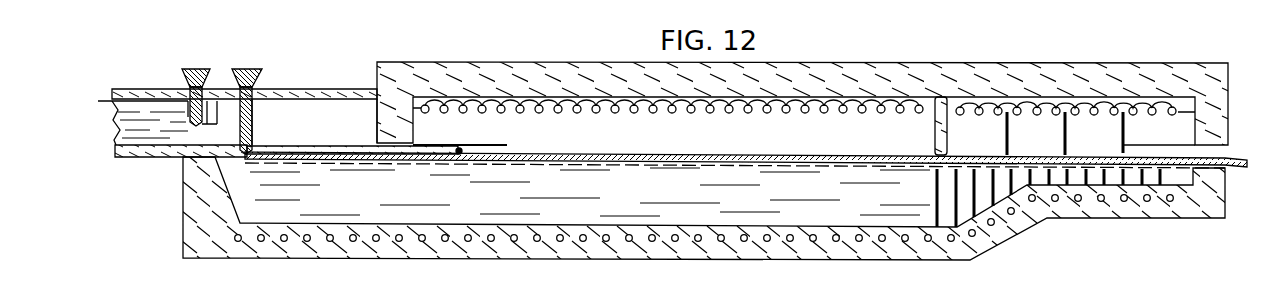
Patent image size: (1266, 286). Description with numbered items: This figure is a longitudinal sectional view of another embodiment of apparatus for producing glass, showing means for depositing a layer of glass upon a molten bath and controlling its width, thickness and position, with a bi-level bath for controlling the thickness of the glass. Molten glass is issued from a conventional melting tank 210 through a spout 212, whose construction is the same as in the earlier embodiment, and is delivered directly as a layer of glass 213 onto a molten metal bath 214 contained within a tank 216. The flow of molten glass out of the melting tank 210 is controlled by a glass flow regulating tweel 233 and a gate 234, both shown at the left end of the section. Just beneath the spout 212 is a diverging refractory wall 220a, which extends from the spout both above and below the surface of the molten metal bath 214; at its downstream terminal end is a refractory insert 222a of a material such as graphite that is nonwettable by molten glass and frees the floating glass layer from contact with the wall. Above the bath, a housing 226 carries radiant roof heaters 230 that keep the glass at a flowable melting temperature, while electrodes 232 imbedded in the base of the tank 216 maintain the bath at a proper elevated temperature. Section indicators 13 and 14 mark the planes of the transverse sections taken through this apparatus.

The section line 13- 13 is at (98, 110).
The section line 14- 14 is at (635, 133).
The melting tank 210 is at (174, 159).
The spout 212 is at (251, 142).
The layer of glass 213 is at (290, 160).
The molten metal bath 214 is at (487, 215).
The tank 216 is at (181, 240).
The diverging refractory wall 220a is at (368, 148).
The refractory insert 222a is at (458, 155).
The housing 226 is at (492, 68).
The radiant roof heaters 230 is at (581, 112).
The electrodes 232 is at (375, 235).
The glass flow regulating tweel 233 is at (196, 73).
The gate 234 is at (257, 64).